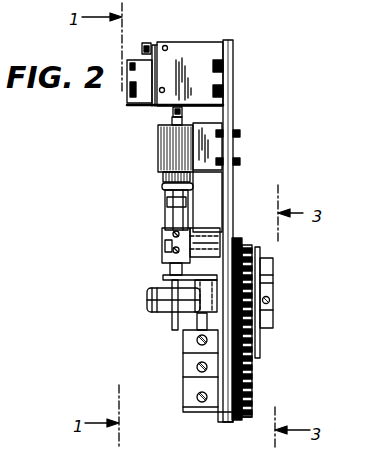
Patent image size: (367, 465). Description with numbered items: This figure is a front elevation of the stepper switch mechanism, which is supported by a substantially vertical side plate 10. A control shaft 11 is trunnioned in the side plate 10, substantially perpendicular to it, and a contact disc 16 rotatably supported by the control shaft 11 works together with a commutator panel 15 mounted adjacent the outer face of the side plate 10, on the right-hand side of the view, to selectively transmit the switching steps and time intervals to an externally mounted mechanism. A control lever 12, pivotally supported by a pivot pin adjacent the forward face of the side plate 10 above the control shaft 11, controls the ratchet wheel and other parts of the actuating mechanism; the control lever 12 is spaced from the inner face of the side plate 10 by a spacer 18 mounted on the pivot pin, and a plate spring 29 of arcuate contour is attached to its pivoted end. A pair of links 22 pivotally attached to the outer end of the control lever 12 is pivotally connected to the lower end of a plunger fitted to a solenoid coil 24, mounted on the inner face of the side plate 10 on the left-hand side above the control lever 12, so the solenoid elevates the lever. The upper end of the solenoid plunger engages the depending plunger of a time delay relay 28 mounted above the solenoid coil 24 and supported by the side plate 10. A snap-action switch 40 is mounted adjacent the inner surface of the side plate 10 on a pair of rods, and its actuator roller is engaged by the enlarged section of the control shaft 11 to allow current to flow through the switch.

The side plate 10 is at (230, 195).
The time delay relay 28 is at (205, 50).
The solenoid coil 24 is at (163, 150).
The control lever 12 is at (183, 236).
The links 22 is at (168, 220).
The control shaft 11 is at (152, 308).
The snap-action switch 40 is at (188, 393).
The spacer 18 is at (215, 230).
The contact disc 16 is at (258, 345).
The commutator panel 15 is at (235, 418).
The plate spring 29 is at (11, 334).